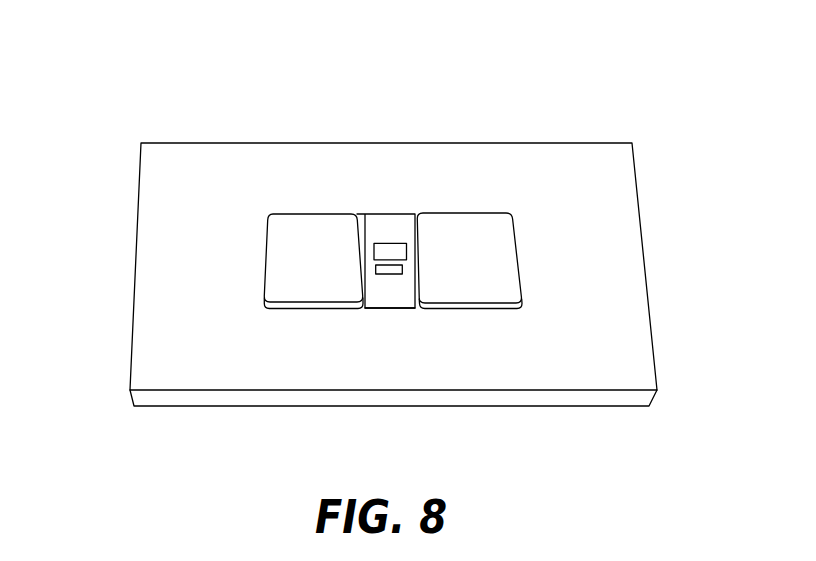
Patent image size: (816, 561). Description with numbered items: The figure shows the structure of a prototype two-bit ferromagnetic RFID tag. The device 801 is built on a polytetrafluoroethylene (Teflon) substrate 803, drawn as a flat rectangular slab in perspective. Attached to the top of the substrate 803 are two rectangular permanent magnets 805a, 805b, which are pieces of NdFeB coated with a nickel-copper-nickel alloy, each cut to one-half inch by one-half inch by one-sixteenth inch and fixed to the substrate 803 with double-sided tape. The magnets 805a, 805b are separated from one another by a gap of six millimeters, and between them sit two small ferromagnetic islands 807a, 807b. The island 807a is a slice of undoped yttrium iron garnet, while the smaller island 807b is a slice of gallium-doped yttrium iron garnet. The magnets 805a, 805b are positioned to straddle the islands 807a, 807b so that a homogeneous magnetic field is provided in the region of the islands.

The device 801 is at (106, 102).
The substrate 803 is at (618, 260).
The permanent magnet 805a is at (290, 225).
The permanent magnet 805b is at (493, 225).
The ferromagnetic island 807a is at (392, 243).
The ferromagnetic island 807b is at (390, 274).